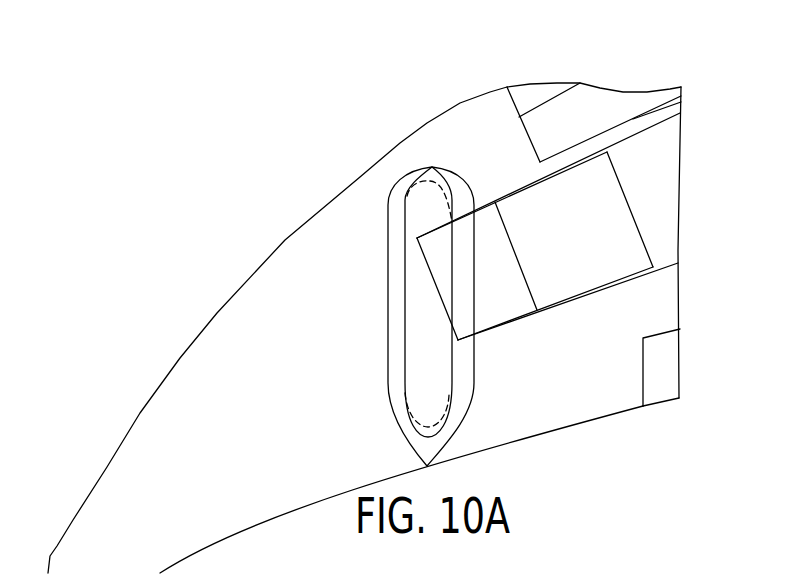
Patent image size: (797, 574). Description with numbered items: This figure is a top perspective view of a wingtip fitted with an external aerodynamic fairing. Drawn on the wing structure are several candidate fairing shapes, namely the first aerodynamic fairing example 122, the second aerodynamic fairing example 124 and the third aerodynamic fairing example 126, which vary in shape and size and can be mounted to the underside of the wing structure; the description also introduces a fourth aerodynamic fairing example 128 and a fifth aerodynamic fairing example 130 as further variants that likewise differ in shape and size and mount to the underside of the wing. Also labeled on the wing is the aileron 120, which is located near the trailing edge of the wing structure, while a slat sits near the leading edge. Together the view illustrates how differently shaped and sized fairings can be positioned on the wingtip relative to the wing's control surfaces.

The aileron 120 is at (432, 167).
The first aerodynamic fairing example 122 is at (417, 168).
The second aerodynamic fairing example 124 is at (388, 197).
The third aerodynamic fairing example 126 is at (637, 217).
The fourth aerodynamic fairing example 128 is at (680, 100).
The fifth aerodynamic fairing example 130 is at (680, 329).